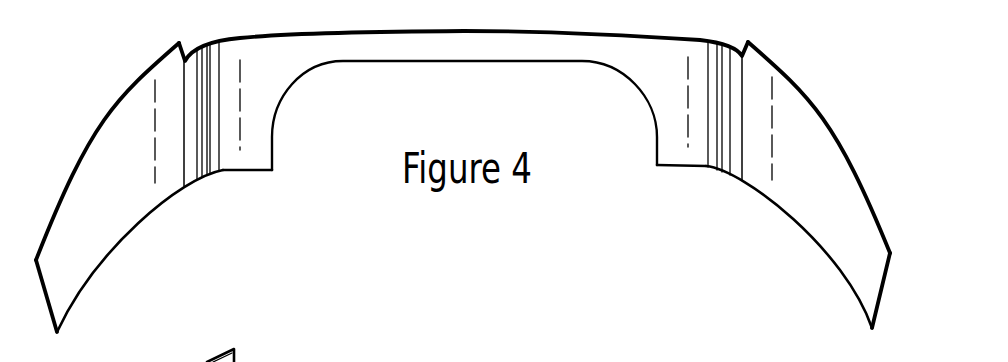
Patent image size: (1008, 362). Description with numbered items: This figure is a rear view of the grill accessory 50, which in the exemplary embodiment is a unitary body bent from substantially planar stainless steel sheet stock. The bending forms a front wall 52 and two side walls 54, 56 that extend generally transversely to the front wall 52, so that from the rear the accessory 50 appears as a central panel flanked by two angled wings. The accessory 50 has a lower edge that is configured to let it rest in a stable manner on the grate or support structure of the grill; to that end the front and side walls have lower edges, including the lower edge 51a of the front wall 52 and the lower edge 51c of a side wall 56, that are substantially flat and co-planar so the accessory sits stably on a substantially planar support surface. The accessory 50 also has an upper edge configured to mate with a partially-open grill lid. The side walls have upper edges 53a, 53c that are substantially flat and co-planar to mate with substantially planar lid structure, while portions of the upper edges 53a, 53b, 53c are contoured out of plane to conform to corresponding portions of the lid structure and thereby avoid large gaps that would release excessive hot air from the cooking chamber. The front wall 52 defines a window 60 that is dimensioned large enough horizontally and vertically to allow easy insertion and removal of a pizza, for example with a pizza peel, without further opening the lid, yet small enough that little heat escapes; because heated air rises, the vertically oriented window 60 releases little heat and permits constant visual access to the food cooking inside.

The accessory 50 is at (463, 174).
The lower edge of front wall 51a is at (798, 227).
The lower edge of side wall 51c is at (129, 229).
The front wall 52 is at (670, 145).
The upper edge of side wall 53a is at (824, 116).
The upper edge of front wall 53b is at (505, 30).
The upper edge of side wall 53c is at (99, 123).
The side wall 54 is at (760, 167).
The side wall 56 is at (167, 171).
The window 60 is at (487, 108).